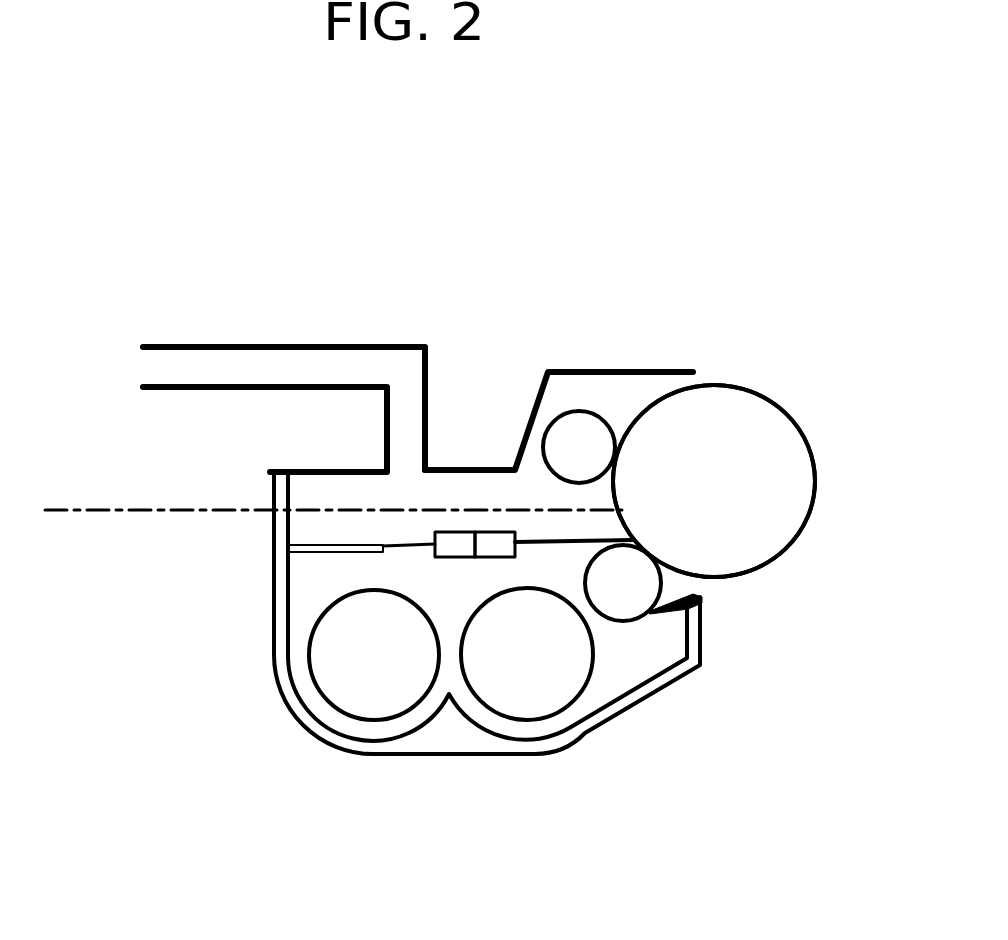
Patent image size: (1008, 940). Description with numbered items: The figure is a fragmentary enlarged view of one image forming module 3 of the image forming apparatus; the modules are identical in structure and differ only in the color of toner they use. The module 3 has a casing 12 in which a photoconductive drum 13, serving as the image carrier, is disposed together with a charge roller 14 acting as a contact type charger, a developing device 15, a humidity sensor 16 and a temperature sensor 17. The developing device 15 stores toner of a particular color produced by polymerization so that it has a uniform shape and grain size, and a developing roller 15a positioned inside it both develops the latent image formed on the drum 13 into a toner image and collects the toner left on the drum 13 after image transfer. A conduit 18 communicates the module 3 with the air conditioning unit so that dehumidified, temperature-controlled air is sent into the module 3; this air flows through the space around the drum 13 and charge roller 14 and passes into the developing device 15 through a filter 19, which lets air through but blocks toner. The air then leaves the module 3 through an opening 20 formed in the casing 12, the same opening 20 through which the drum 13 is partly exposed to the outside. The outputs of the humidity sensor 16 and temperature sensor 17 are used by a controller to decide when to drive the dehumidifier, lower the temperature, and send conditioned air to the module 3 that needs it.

The image forming module 3 is at (464, 367).
The casing 12 is at (401, 755).
The photoconductive drum 13 is at (747, 567).
The charge roller 14 is at (586, 410).
The developing device 15 is at (350, 740).
The developing roller 15a is at (630, 608).
The humidity sensor 16 is at (433, 560).
The temperature sensor 17 is at (497, 552).
The conduit 18 is at (203, 345).
The filter 19 is at (327, 545).
The opening 20 is at (693, 378).